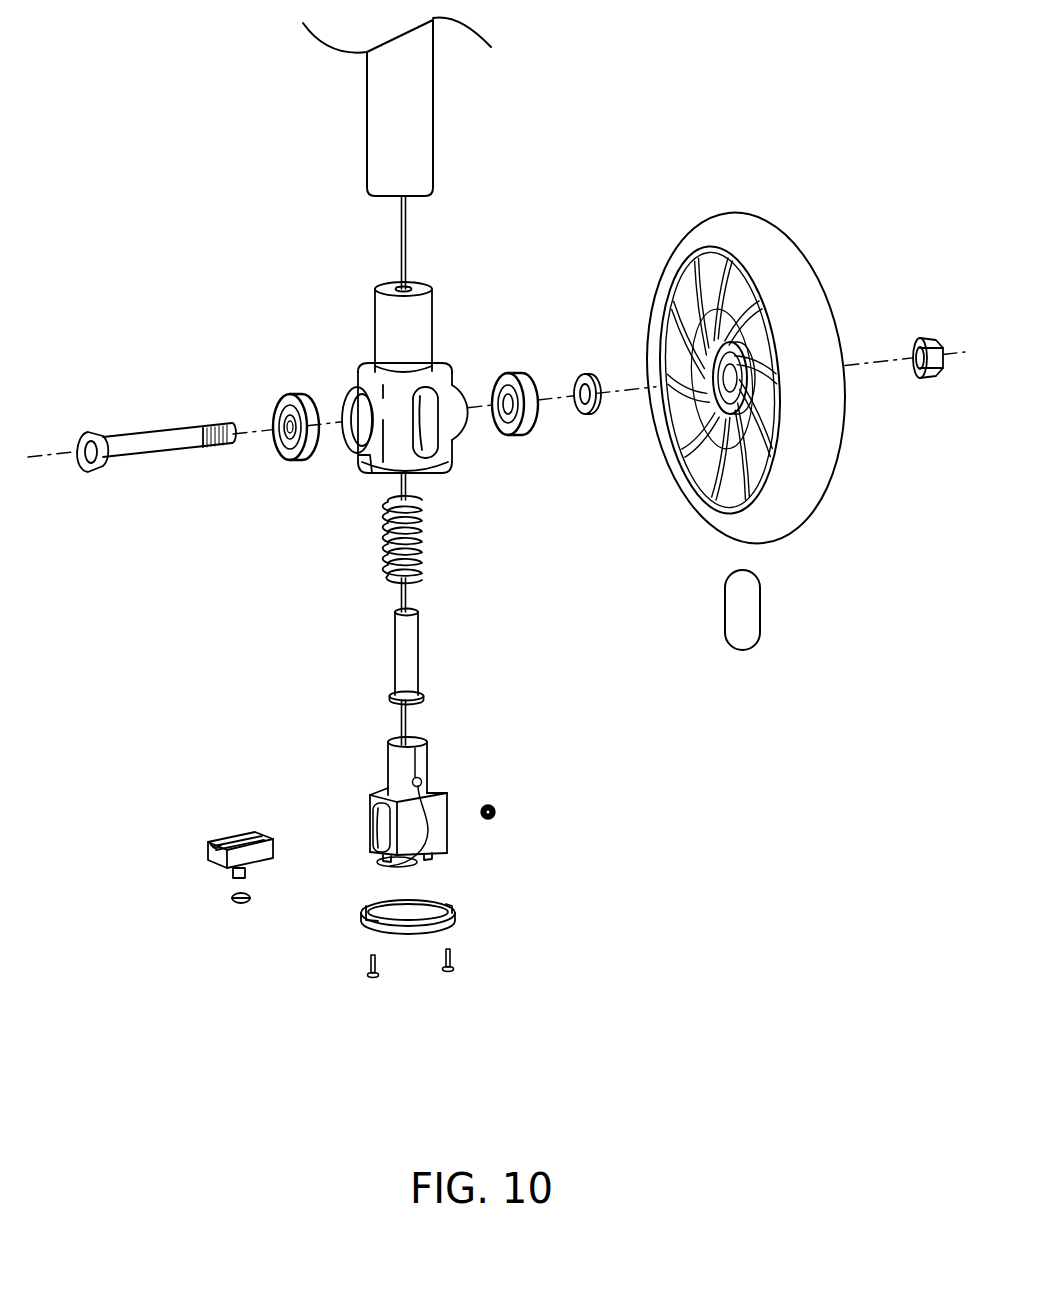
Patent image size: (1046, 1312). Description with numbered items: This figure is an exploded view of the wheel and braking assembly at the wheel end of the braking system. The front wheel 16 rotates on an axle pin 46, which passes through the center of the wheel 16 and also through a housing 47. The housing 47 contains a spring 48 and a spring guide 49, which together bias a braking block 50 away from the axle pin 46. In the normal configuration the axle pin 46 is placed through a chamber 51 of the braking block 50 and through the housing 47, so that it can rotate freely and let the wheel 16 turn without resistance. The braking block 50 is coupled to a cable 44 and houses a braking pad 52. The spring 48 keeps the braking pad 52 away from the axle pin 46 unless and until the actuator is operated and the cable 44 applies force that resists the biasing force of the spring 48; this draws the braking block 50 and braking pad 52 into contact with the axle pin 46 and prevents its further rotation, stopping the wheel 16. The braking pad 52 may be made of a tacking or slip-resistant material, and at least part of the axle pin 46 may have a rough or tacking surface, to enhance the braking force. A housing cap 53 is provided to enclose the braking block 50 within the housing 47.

The front wheel 16 is at (735, 211).
The cable 44 is at (406, 240).
The axle pin 46 is at (148, 430).
The housing 47 is at (433, 333).
The spring 48 is at (423, 540).
The spring guide 49 is at (419, 658).
The braking block 50 is at (430, 797).
The chamber 51 is at (373, 828).
The braking pad 52 is at (212, 845).
The housing cap 53 is at (455, 920).